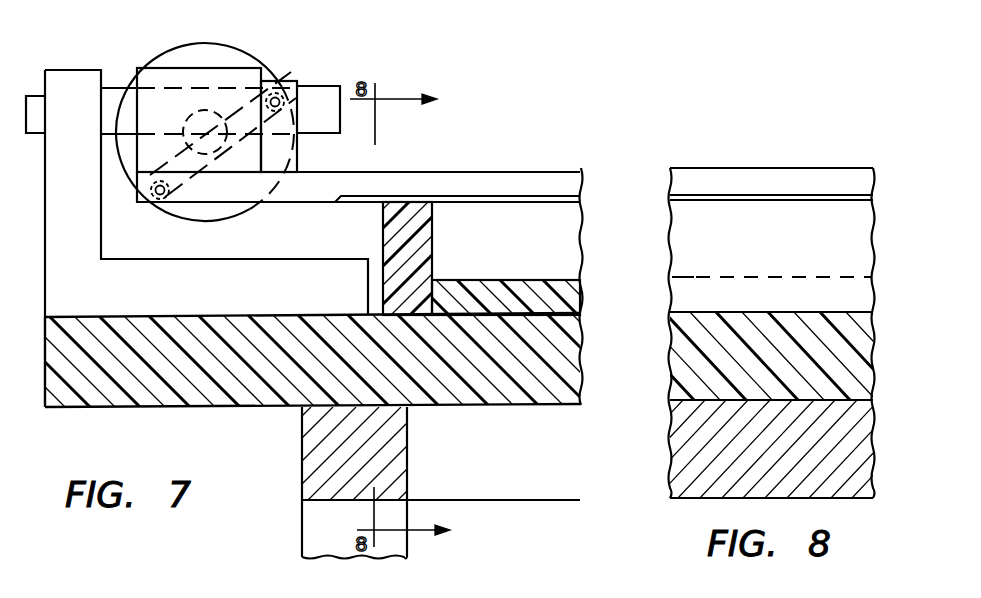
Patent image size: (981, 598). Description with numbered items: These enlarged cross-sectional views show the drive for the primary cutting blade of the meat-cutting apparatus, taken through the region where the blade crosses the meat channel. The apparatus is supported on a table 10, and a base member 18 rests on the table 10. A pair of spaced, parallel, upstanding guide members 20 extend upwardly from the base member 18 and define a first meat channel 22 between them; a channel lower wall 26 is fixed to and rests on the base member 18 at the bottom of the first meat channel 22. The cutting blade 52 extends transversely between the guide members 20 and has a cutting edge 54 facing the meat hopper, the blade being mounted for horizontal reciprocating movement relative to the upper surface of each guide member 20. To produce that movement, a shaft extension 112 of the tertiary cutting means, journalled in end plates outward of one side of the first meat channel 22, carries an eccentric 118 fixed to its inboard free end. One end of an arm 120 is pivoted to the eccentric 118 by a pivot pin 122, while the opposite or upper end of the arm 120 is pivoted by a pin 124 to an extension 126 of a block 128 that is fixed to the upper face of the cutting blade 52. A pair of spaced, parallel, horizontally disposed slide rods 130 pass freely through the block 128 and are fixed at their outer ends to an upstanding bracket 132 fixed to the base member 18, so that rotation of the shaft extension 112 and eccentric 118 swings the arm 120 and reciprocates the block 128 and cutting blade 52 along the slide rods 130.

In FIG. 7, the table 10 is at (312, 431).
In FIG. 8, the table 10 is at (682, 436).
In FIG. 7, the base member 18 is at (575, 355).
In FIG. 8, the base member 18 is at (680, 362).
In FIG. 7, the guide member 20 is at (433, 218).
In FIG. 8, the guide member 20 is at (685, 238).
In FIG. 7, the first meat channel 22 is at (447, 270).
In FIG. 8, the first meat channel 22 is at (777, 266).
In FIG. 7, the channel lower wall 26 is at (514, 285).
In FIG. 8, the channel lower wall 26 is at (704, 277).
In FIG. 7, the cutting blade 52 is at (447, 172).
In FIG. 8, the cutting blade 52 is at (740, 168).
In FIG. 7, the cutting edge 54 is at (515, 196).
In FIG. 8, the cutting edge 54 is at (790, 195).
In FIG. 7, the shaft extension 112 is at (204, 110).
In FIG. 7, the eccentric 118 is at (240, 44).
In FIG. 7, the arm 120 is at (240, 205).
In FIG. 7, the pivot pin 122 is at (170, 200).
In FIG. 7, the pin 124 is at (279, 95).
In FIG. 7, the extension 126 is at (297, 103).
In FIG. 7, the block 128 is at (169, 75).
In FIG. 7, the slide rod 130 is at (115, 90).
In FIG. 7, the upstanding bracket 132 is at (146, 278).